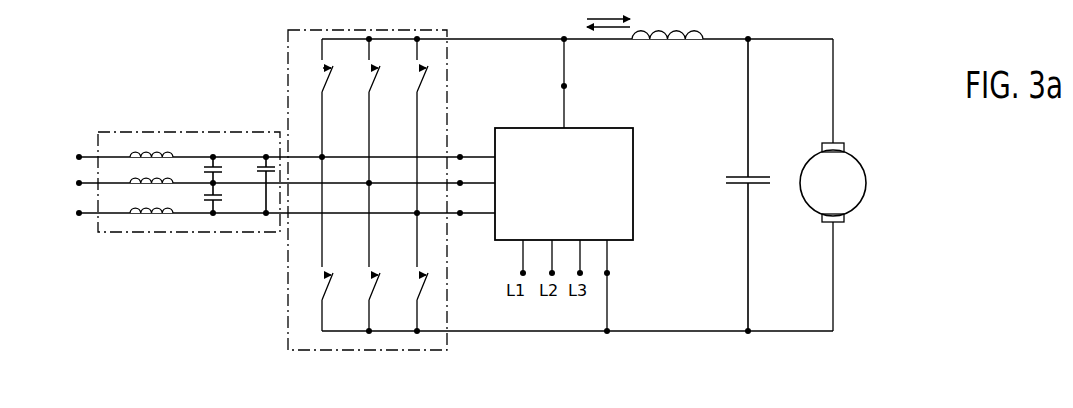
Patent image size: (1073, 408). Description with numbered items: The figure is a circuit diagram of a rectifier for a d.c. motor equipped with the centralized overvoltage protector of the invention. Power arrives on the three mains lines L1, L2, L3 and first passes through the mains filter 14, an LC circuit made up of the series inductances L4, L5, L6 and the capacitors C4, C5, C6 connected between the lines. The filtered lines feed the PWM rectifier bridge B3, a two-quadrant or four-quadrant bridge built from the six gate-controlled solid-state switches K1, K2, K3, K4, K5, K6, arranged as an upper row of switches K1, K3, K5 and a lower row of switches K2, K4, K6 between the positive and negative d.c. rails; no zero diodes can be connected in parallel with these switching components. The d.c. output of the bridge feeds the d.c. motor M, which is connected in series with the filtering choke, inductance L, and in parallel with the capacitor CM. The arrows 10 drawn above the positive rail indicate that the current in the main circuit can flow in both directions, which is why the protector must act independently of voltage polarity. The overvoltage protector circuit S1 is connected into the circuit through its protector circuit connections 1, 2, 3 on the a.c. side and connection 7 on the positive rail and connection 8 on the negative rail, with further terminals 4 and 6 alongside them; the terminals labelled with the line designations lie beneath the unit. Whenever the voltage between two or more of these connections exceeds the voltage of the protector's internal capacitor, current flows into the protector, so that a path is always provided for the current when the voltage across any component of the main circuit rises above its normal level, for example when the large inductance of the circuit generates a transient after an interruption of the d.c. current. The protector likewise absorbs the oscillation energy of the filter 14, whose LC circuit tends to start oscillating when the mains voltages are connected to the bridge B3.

The mains filter 14 is at (224, 131).
The PWM rectifier bridge B3 is at (345, 29).
The current flow direction indication 10 is at (608, 13).
The protector circuit connection 7 is at (571, 82).
The protector circuit connection 1 is at (466, 147).
The protector circuit connection 2 is at (491, 218).
The protector circuit connection 3 is at (466, 203).
The output terminal 4 is at (548, 258).
The output terminal 6 is at (576, 258).
The protector circuit connection 8 is at (612, 287).
The overvoltage protector circuit S1 is at (564, 184).
The inductance L is at (667, 51).
The capacitor CM is at (733, 185).
The d.c. motor M is at (840, 192).
The solid-state switch K1 is at (315, 153).
The solid-state switch K2 is at (315, 302).
The solid-state switch K3 is at (362, 153).
The solid-state switch K4 is at (362, 302).
The solid-state switch K5 is at (410, 153).
The solid-state switch K6 is at (410, 302).
The mains line L1 is at (270, 157).
The mains line L2 is at (270, 183).
The mains line L3 is at (270, 213).
The inductance L4 is at (139, 148).
The inductance L5 is at (139, 173).
The inductance L6 is at (139, 203).
The capacitor C4 is at (201, 170).
The capacitor C5 is at (255, 185).
The capacitor C6 is at (201, 199).